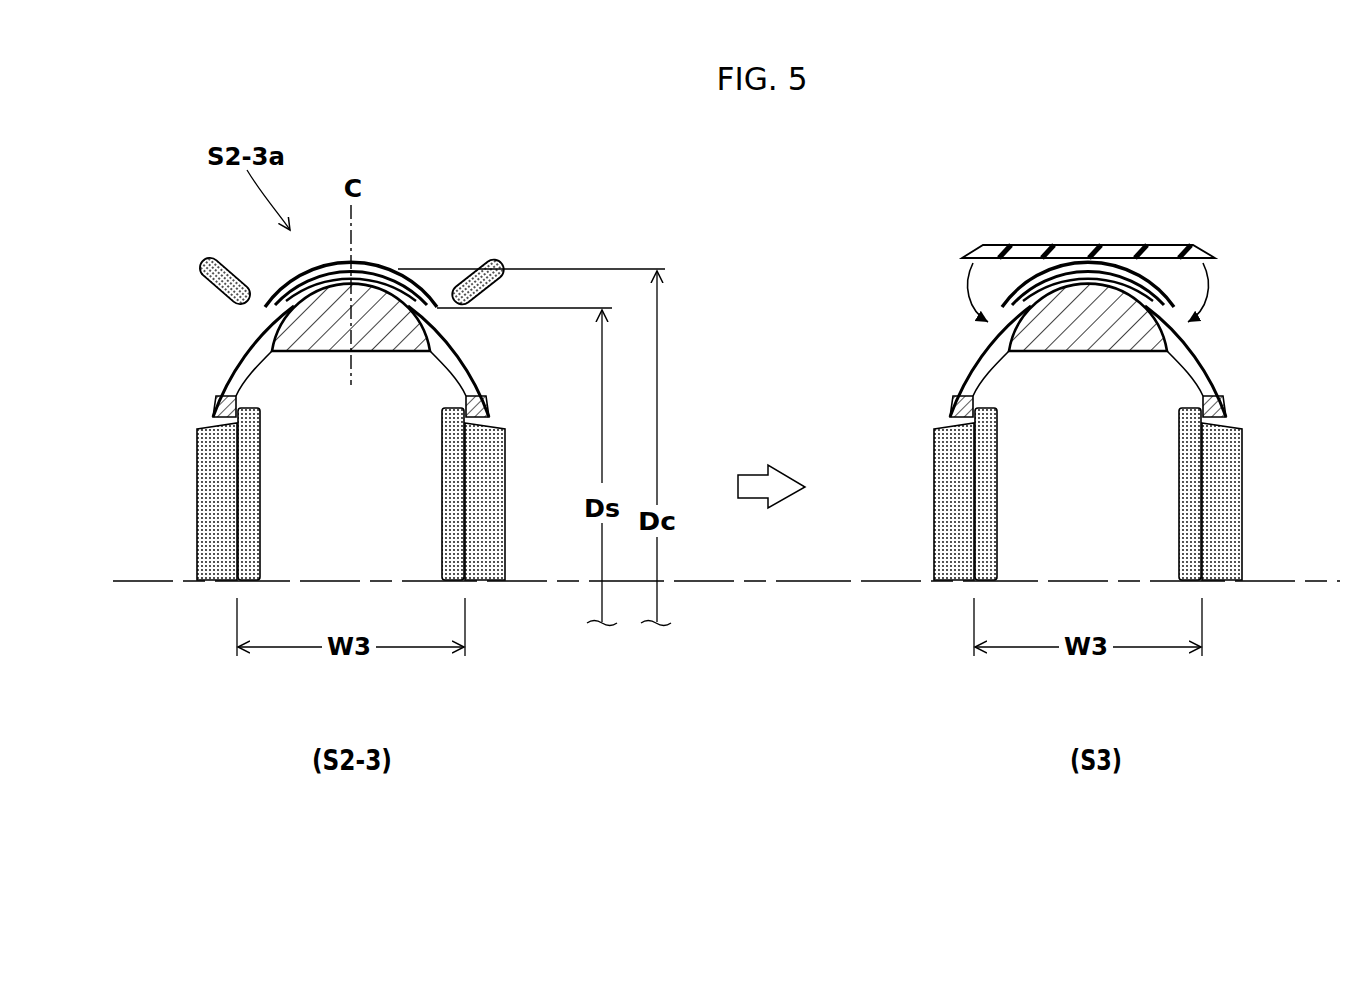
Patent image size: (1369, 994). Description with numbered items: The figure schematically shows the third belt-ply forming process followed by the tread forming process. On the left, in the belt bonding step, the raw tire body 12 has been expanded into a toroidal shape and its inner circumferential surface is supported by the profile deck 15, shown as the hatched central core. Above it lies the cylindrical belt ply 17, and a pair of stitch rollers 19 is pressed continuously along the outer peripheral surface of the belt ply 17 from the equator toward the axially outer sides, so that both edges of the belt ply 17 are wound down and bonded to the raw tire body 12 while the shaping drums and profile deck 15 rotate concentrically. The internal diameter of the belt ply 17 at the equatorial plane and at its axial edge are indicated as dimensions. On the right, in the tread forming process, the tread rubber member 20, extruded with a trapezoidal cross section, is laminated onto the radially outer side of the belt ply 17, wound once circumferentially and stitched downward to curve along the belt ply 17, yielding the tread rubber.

The raw tire body 12 is at (260, 337).
The profile deck 15 is at (337, 335).
The cylindrical belt ply 17 is at (366, 262).
The stitch rollers 19 is at (222, 297).
The tread rubber member 20 is at (1117, 250).